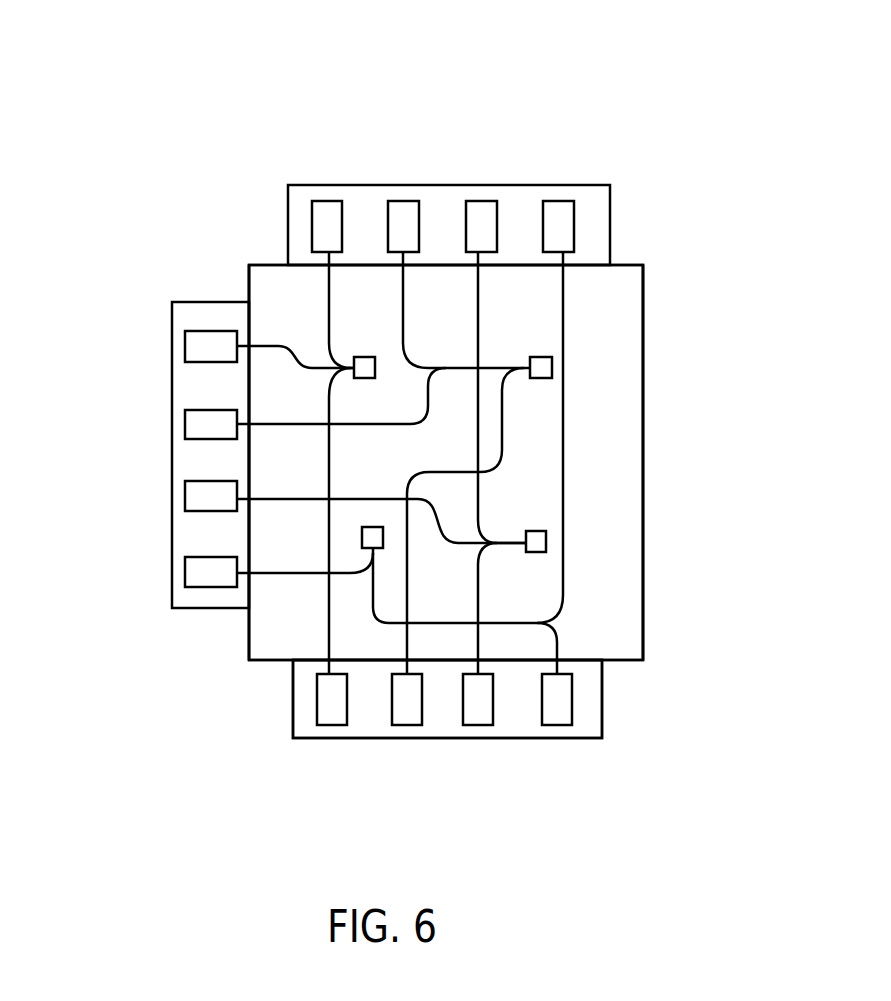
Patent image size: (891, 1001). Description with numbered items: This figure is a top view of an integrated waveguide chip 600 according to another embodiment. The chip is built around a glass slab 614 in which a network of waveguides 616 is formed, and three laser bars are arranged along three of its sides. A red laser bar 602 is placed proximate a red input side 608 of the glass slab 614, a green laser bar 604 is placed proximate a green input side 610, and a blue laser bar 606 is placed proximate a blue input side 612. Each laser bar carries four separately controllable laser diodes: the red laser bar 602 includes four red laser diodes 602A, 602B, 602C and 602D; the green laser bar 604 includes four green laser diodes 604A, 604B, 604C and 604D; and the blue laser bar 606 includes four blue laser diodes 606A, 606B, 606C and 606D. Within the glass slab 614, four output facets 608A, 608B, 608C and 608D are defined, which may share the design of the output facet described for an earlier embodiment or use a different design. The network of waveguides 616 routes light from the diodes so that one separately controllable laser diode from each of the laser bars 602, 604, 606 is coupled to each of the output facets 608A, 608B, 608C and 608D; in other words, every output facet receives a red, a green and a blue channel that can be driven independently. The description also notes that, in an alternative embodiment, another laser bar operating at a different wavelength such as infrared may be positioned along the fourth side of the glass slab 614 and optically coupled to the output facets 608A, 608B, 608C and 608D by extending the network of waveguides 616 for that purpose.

The integrated waveguide chip 600 is at (745, 75).
The red laser bar 602 is at (290, 673).
The red laser diode 602A is at (332, 725).
The red laser diode 602B is at (411, 726).
The red laser diode 602C is at (490, 726).
The red laser diode 602D is at (557, 726).
The green laser bar 604 is at (183, 300).
The green laser diode 604A is at (185, 337).
The green laser diode 604B is at (185, 425).
The green laser diode 604C is at (185, 497).
The green laser diode 604D is at (185, 570).
The blue laser bar 606 is at (610, 185).
The blue laser diode 606A is at (328, 200).
The blue laser diode 606B is at (407, 200).
The blue laser diode 606C is at (485, 200).
The blue laser diode 606D is at (552, 200).
The red input side 608 is at (627, 663).
The output facet 608A is at (358, 357).
The output facet 608B is at (375, 527).
The output facet 608C is at (543, 530).
The output facet 608D is at (543, 357).
The green input side 610 is at (248, 287).
The blue input side 612 is at (625, 268).
The glass slab 614 is at (618, 342).
The network of waveguides 616 is at (508, 442).